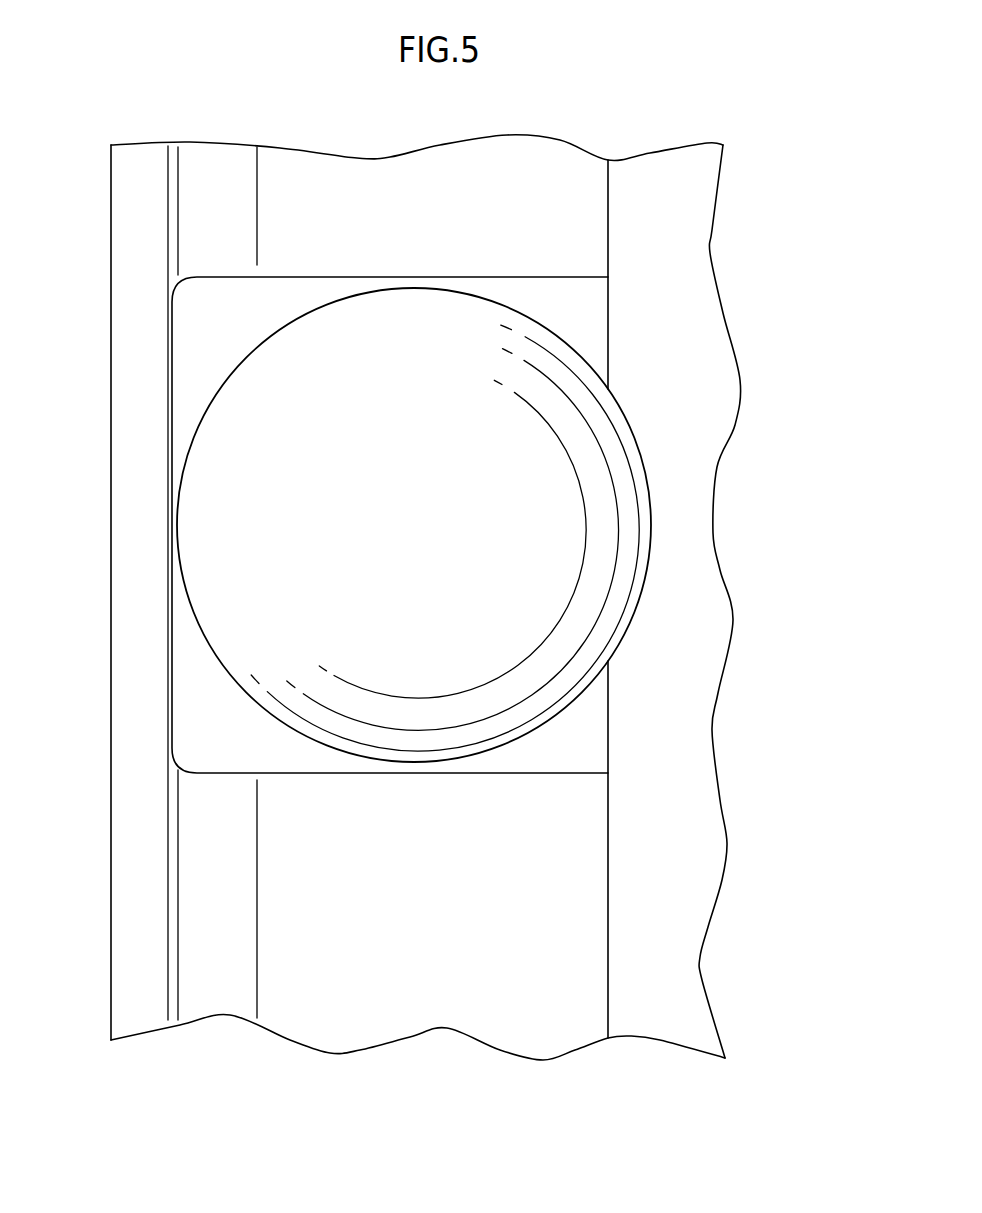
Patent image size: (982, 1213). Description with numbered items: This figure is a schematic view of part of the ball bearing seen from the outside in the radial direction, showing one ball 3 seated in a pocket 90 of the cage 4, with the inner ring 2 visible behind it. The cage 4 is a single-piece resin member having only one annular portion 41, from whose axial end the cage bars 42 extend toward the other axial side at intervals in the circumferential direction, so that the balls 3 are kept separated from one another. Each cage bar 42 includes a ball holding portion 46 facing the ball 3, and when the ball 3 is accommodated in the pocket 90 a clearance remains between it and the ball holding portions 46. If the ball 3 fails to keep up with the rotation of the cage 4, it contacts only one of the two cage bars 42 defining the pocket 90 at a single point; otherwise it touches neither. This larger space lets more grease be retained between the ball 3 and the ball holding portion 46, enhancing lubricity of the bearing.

The inner ring 2 is at (700, 392).
The ball 3 is at (507, 505).
The cage 4 is at (507, 838).
The annular portion 41 is at (142, 573).
The cage bar 42 is at (577, 218).
The ball holding portion 46 is at (577, 177).
The pocket 90 is at (562, 278).